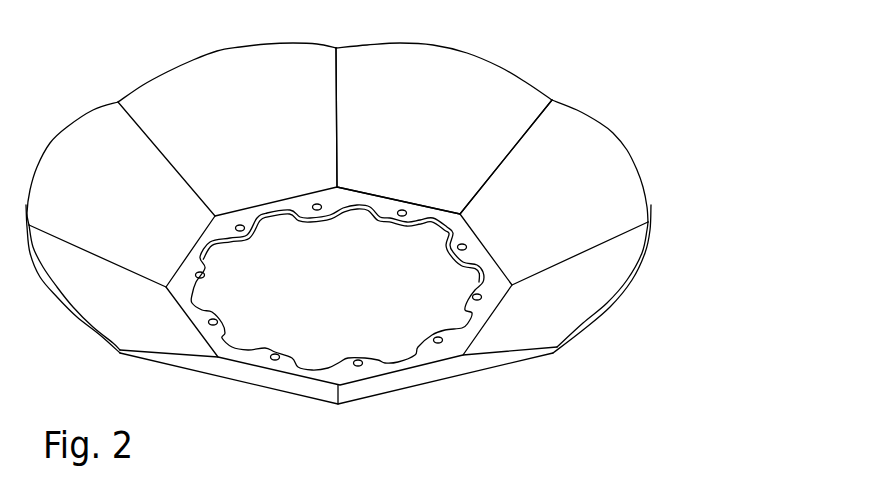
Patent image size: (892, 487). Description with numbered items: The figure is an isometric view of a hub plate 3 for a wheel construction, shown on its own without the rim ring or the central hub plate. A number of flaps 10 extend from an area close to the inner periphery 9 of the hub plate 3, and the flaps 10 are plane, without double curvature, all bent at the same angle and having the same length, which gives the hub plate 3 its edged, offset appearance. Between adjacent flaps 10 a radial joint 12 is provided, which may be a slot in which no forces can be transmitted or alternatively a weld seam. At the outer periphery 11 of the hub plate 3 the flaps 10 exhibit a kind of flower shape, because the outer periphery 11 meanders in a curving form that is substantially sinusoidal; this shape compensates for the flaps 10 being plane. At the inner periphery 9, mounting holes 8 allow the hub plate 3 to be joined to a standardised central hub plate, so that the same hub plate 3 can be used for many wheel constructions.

The hub plate 3 is at (106, 79).
The mounting holes 8 is at (201, 276).
The inner periphery 9 is at (249, 236).
The flaps 10 is at (428, 134).
The outer periphery 11 is at (461, 56).
The radial joint 12 is at (166, 156).